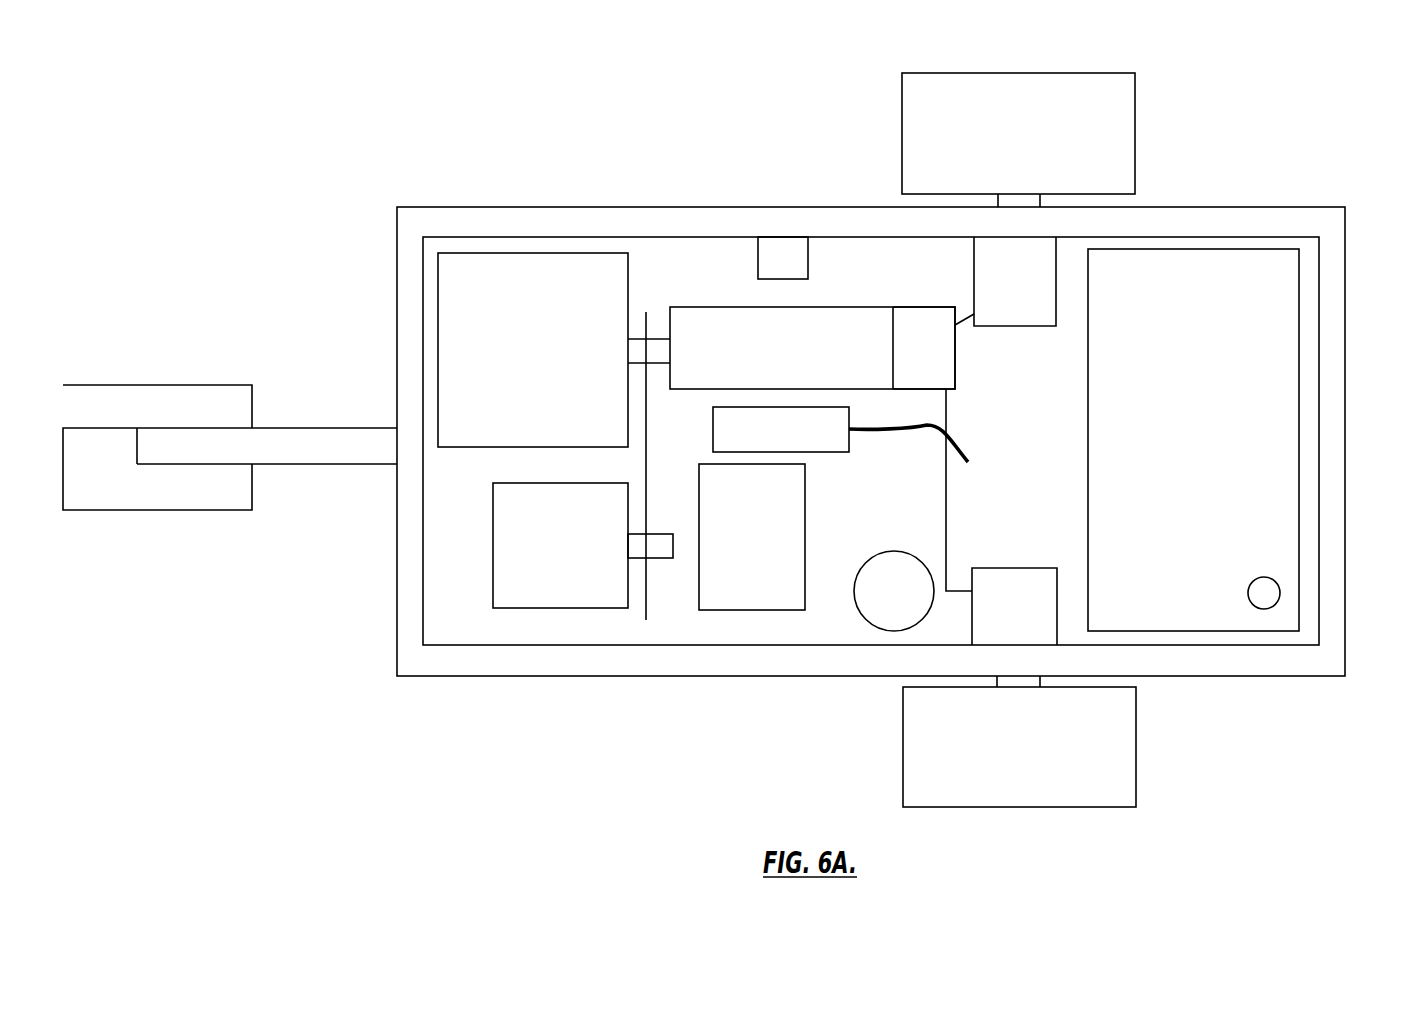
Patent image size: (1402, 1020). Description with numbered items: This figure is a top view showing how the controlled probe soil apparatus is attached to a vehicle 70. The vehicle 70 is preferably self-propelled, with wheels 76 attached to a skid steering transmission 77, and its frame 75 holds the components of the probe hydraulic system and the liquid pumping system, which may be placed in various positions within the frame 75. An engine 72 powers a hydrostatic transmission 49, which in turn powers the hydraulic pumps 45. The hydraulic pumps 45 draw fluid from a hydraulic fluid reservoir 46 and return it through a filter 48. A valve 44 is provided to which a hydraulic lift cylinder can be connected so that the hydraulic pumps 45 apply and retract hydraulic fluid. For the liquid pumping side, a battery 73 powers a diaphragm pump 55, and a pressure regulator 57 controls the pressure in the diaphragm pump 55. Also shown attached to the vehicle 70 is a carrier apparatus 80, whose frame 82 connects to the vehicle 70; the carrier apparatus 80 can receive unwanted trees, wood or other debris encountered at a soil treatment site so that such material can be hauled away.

The vehicle 70 is at (1312, 166).
The frame 75 is at (538, 206).
The engine 72 is at (452, 333).
The diaphragm pump 55 is at (493, 560).
The skid steering transmission 77 is at (682, 307).
The hydrostatic transmission 49 is at (925, 307).
The pressure regulator 57 is at (779, 237).
The valve 44 is at (970, 457).
The battery 73 is at (725, 610).
The filter 48 is at (868, 623).
The hydraulic pumps 45 is at (1055, 289).
The hydraulic fluid reservoir 46 is at (1176, 632).
The wheels 76 is at (987, 72).
The carrier apparatus 80 is at (193, 385).
The frame 82 is at (293, 428).